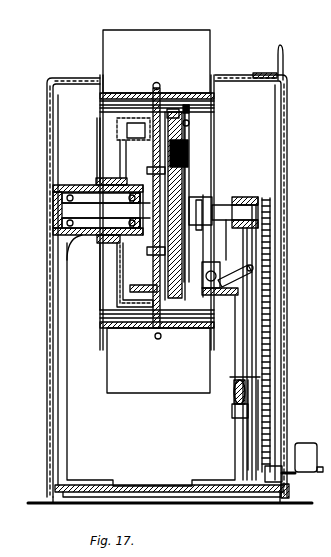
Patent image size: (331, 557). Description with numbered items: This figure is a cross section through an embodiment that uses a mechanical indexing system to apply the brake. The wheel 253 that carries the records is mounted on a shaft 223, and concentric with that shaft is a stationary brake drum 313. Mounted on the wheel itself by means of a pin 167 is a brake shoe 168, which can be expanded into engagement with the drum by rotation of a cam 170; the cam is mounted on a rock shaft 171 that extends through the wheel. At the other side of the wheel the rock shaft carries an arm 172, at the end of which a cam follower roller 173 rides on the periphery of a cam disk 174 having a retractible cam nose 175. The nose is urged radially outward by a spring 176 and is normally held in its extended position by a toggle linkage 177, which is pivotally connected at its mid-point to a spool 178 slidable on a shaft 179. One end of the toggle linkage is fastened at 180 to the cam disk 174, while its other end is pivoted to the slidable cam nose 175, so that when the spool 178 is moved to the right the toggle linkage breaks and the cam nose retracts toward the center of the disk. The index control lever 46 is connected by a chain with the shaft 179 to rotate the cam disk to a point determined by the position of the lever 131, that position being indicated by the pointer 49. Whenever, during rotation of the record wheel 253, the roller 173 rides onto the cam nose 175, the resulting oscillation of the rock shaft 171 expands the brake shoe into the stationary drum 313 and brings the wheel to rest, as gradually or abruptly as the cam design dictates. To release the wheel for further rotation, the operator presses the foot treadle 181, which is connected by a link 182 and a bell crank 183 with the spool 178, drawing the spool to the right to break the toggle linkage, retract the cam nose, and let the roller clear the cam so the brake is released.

The wheel 253 is at (215, 88).
The pointer 49 is at (262, 72).
The index control lever 46 is at (283, 53).
The lever 131 is at (283, 132).
The stationary brake drum 313 is at (118, 128).
The cam 170 is at (145, 134).
The rock shaft 171 is at (150, 146).
The arm 172 is at (208, 101).
The cam follower roller 173 is at (205, 110).
The retractible cam nose 175 is at (192, 124).
The spring 176 is at (190, 148).
The toggle linkage 177 is at (186, 170).
The spool 178 is at (200, 197).
The shaft 179 is at (218, 208).
The shaft 223 is at (52, 216).
The brake shoe 168 is at (143, 263).
The pin 167 is at (130, 289).
The bell crank 183 is at (247, 263).
The link 182 is at (248, 337).
The cam disk 174 is at (180, 325).
The toggle linkage fastening point 180 is at (186, 300).
The foot treadle 181 is at (304, 452).